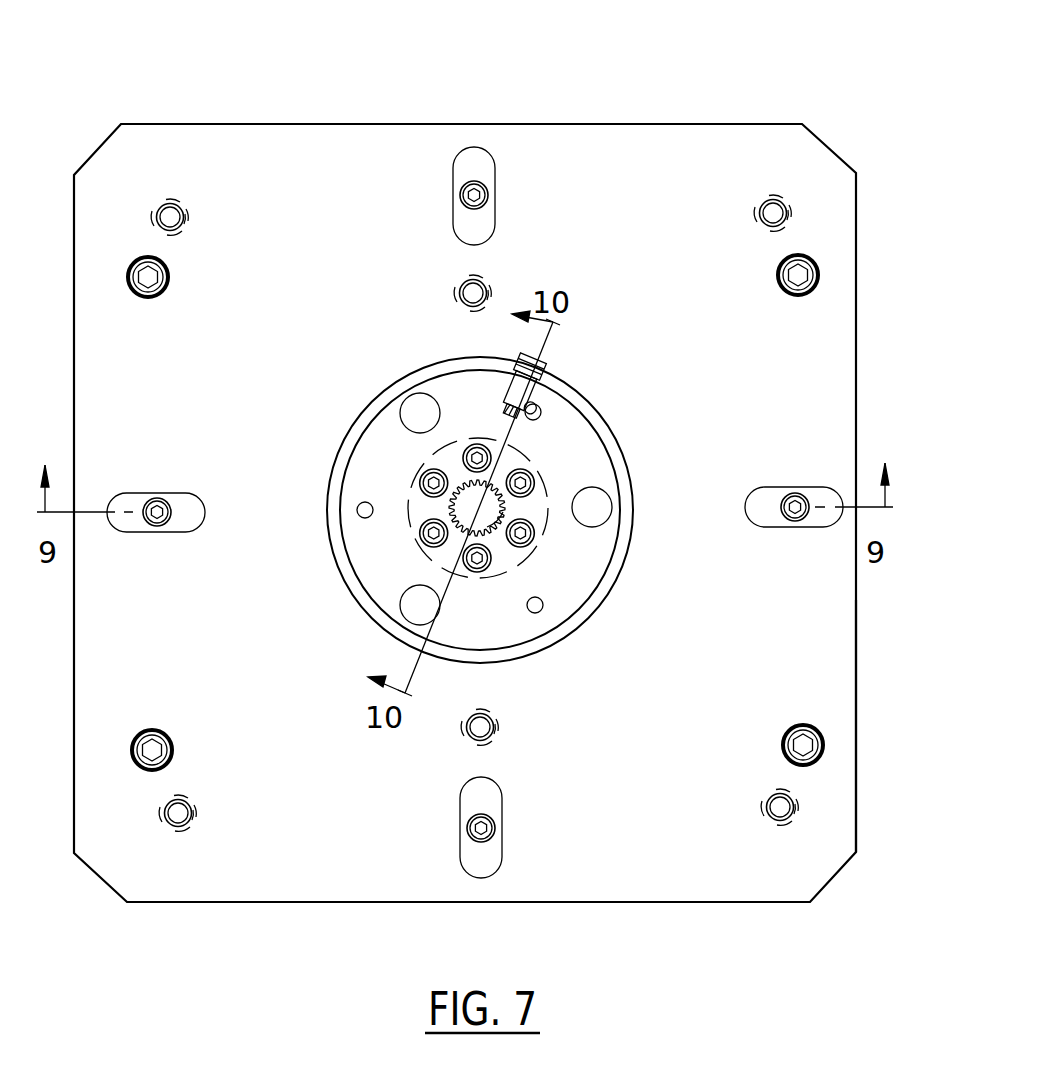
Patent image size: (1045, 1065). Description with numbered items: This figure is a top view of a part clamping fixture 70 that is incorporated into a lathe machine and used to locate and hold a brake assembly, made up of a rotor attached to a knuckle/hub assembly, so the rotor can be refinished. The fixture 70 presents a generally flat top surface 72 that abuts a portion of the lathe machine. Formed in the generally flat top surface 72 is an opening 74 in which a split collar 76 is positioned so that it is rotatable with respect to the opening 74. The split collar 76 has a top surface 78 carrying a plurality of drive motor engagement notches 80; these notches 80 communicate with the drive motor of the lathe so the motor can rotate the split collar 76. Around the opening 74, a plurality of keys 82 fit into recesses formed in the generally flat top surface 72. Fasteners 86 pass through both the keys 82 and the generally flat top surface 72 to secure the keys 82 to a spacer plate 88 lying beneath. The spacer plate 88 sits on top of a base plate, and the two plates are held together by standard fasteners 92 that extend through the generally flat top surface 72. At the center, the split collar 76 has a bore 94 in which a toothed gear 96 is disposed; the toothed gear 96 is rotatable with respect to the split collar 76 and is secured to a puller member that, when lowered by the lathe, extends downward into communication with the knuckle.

The part clamping fixture 70 is at (628, 102).
The generally flat top surface 72 is at (694, 273).
The opening 74 is at (588, 410).
The split collar 76 is at (585, 595).
The top surface 78 is at (581, 465).
The drive motor engagement notches 80 is at (440, 470).
The keys 82 is at (183, 501).
The fasteners 86 is at (158, 500).
The spacer plate 88 is at (845, 667).
The standard fasteners 92 is at (186, 225).
The bore 94 is at (505, 510).
The toothed gear 96 is at (488, 528).